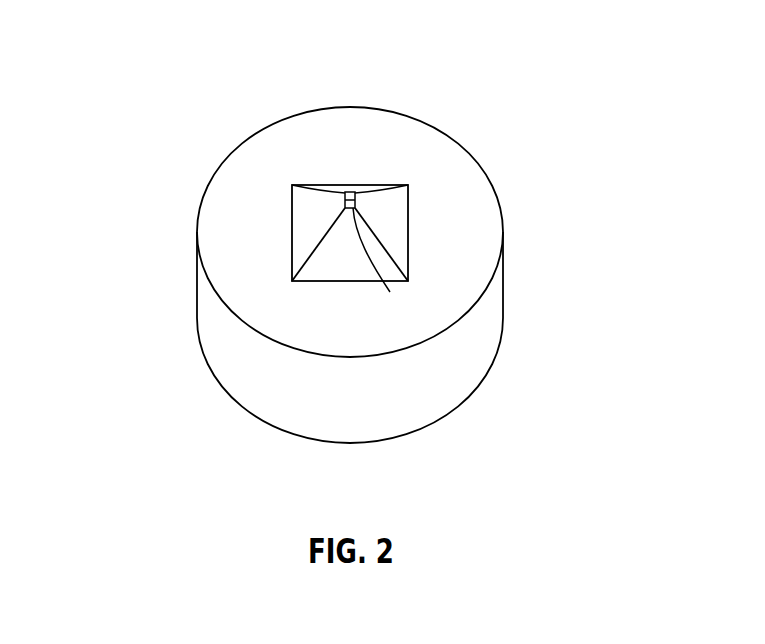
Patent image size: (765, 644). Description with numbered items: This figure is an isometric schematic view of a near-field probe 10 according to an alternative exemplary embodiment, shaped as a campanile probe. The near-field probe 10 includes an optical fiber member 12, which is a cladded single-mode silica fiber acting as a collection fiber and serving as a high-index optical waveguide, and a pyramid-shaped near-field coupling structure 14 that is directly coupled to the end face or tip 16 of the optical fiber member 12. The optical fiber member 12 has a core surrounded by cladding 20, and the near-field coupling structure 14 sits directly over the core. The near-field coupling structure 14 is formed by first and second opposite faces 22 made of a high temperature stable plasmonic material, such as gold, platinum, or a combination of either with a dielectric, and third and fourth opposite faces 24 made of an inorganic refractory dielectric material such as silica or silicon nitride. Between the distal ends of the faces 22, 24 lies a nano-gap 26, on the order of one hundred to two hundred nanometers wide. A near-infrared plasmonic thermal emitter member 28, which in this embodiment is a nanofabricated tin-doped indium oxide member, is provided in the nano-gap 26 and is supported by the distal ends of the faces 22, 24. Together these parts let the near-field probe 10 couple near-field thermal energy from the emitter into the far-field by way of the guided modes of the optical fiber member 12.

The near-field probe 10 is at (126, 52).
The optical fiber member 12 is at (483, 312).
The near-field coupling structure 14 is at (397, 177).
The end face or tip 16 is at (483, 243).
The cladding 20 is at (325, 425).
The first and second opposite faces 22 is at (317, 223).
The third and fourth opposite faces 24 is at (335, 187).
The nano-gap 26 is at (350, 188).
The near-infrared plasmonic thermal emitter member 28 is at (378, 267).